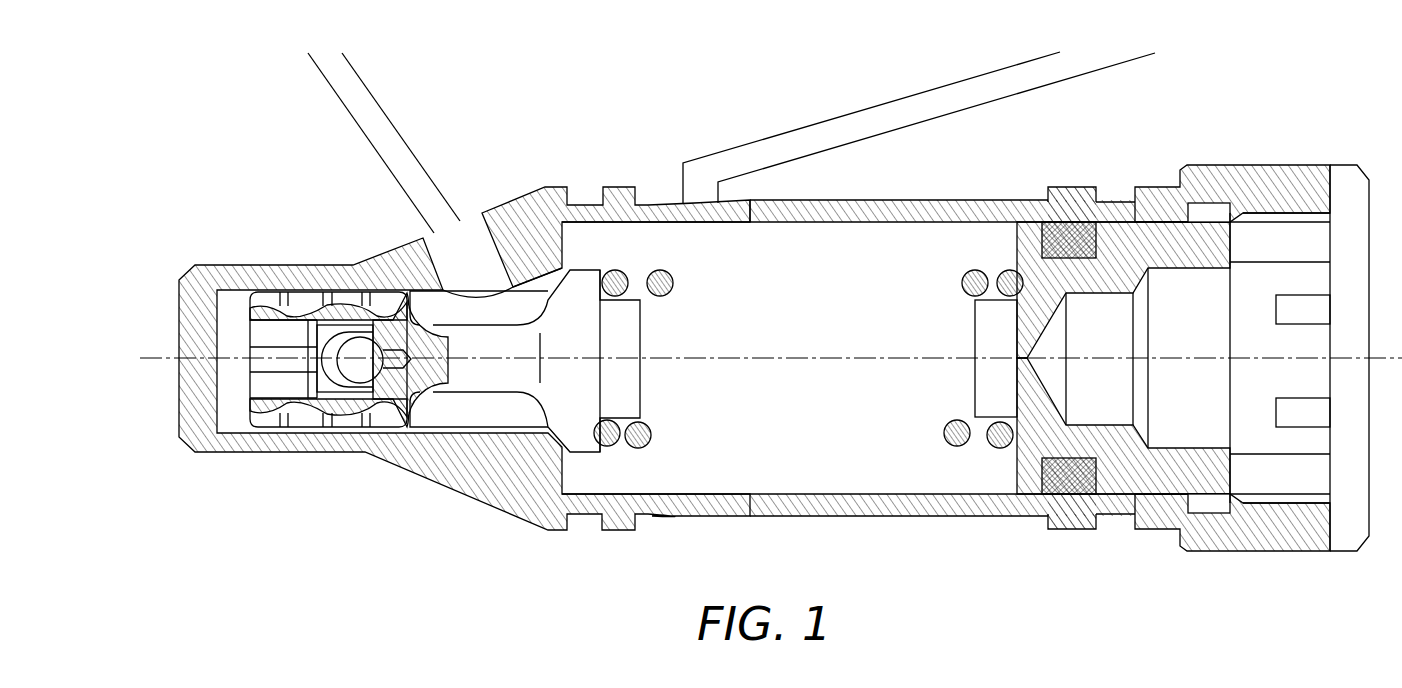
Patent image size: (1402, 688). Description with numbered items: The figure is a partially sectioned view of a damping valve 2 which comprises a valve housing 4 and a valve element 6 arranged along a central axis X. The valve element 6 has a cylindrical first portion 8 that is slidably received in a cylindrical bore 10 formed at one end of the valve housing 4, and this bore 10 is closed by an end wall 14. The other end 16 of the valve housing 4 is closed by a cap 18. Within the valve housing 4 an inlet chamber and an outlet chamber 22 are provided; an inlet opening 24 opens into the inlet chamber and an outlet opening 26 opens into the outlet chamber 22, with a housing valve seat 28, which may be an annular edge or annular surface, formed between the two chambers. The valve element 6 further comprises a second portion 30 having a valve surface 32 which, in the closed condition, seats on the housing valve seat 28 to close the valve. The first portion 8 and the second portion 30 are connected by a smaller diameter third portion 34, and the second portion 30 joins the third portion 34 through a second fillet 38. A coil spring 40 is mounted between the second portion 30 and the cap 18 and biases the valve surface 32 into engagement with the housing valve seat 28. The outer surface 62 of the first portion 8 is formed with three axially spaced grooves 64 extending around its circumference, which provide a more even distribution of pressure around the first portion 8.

The damping valve 2 is at (1296, 54).
The valve housing 4 is at (965, 205).
The valve element 6 is at (583, 386).
The cylindrical first portion 8 is at (341, 308).
The cylindrical bore 10 is at (378, 291).
The end wall 14 is at (190, 398).
The other end 16 is at (1070, 530).
The cap 18 is at (1270, 545).
The outlet chamber 22 is at (882, 246).
The inlet opening 24 is at (473, 235).
The outlet opening 26 is at (667, 205).
The housing valve seat 28 is at (563, 242).
The second portion 30 is at (570, 410).
The valve surface 32 is at (560, 283).
The third portion 34 is at (467, 380).
The second fillet 38 is at (543, 400).
The coil spring 40 is at (655, 432).
The outer surface 62 is at (308, 430).
The grooves 64 is at (357, 432).
The central axis X is at (818, 362).